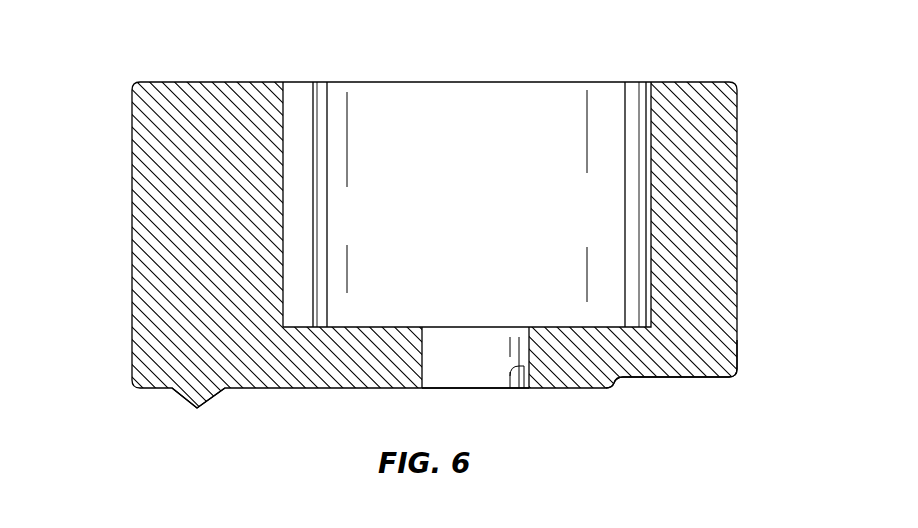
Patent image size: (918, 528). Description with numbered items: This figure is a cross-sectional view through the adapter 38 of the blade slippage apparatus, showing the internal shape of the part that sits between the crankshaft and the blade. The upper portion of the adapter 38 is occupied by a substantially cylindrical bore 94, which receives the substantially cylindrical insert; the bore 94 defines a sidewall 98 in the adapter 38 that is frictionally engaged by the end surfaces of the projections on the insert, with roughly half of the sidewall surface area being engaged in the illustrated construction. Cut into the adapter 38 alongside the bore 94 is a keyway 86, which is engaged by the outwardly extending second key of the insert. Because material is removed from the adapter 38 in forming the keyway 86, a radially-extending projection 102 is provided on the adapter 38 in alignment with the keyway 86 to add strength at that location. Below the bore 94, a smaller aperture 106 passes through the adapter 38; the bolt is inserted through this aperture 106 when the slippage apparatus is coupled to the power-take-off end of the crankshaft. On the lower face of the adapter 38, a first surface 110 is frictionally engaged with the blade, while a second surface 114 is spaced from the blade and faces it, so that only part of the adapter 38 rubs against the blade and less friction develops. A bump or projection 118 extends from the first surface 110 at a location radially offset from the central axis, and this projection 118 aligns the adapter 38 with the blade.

The adapter 38 is at (716, 40).
The keyway 86 is at (284, 103).
The bore 94 is at (497, 113).
The sidewall 98 is at (650, 232).
The radially-extending projection 102 is at (142, 142).
The aperture 106 is at (519, 390).
The first surface 110 is at (610, 391).
The second surface 114 is at (697, 379).
The projection 118 is at (197, 410).